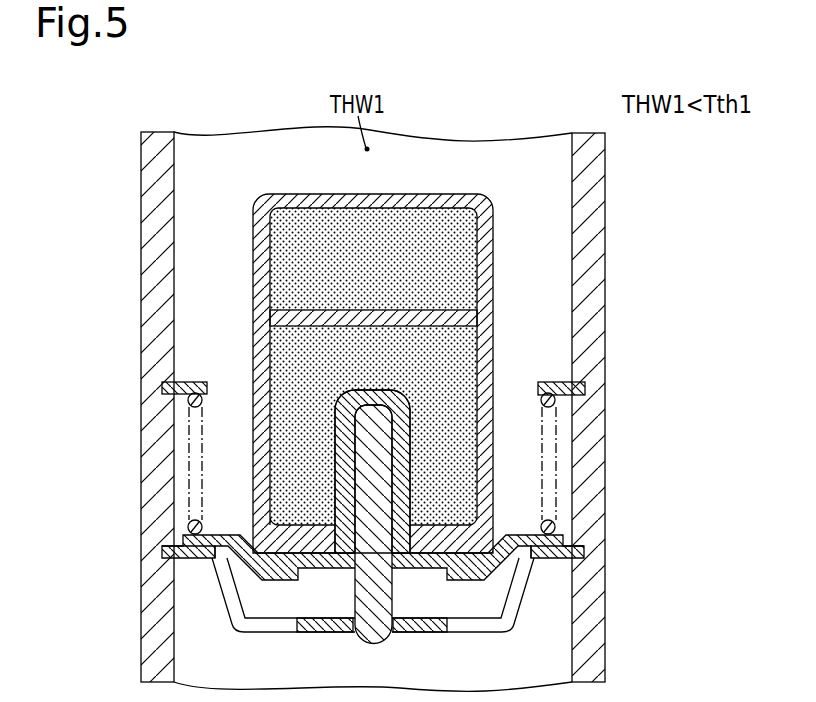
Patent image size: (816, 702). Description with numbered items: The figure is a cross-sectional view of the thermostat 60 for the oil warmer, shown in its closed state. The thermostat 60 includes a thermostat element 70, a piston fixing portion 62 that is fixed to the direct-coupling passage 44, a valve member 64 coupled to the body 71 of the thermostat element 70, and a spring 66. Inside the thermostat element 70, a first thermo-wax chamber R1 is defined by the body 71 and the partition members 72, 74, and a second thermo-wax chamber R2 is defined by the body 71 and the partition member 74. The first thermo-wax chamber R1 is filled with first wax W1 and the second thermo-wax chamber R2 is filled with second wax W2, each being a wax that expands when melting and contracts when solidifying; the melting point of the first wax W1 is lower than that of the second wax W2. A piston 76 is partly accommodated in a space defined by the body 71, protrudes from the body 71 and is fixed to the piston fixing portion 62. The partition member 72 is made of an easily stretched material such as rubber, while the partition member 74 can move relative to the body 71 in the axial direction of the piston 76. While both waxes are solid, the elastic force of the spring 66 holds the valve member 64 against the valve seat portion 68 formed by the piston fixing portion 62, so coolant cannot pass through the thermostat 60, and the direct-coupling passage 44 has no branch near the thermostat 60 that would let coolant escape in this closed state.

The direct-coupling passage 44 is at (562, 213).
The thermostat 60 is at (681, 258).
The piston fixing portion 62 is at (478, 634).
The valve member 64 is at (562, 549).
The spring 66 is at (547, 404).
The valve seat portion 68 is at (535, 562).
The thermostat element 70 is at (377, 349).
The body 71 is at (493, 273).
The partition member 72 is at (293, 527).
The partition member 74 is at (272, 320).
The piston 76 is at (371, 645).
The first wax W1 is at (373, 425).
The second wax W2 is at (373, 259).
The first thermo-wax chamber R1 is at (296, 398).
The second thermo-wax chamber R2 is at (296, 258).